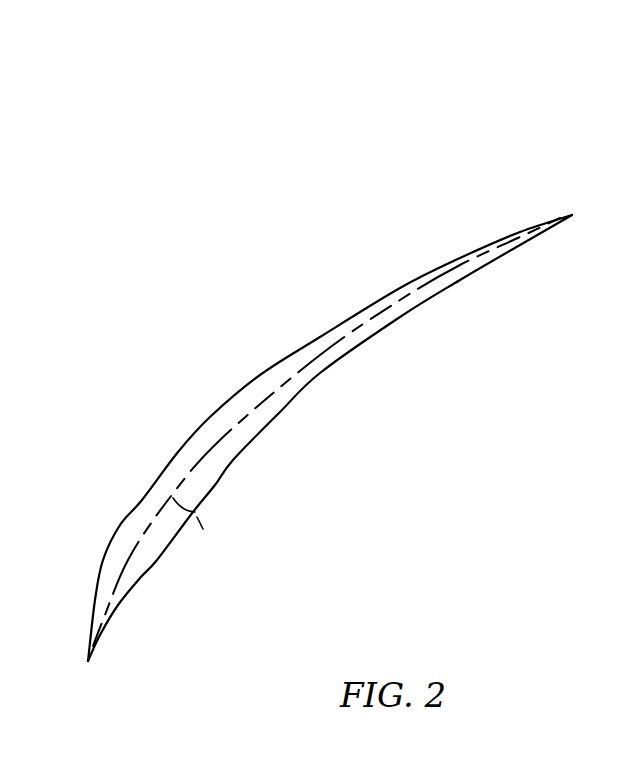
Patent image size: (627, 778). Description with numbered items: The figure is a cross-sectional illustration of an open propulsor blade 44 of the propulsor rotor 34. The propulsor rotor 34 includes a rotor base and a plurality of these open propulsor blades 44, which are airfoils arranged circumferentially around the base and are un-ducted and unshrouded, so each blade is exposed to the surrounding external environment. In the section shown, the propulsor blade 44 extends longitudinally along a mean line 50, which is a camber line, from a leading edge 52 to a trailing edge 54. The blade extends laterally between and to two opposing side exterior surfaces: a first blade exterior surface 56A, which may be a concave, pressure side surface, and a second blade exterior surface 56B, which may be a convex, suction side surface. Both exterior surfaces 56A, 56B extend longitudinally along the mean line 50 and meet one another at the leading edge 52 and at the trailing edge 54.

The propulsor rotor 34 is at (353, 148).
The propulsor blade 44 is at (211, 415).
The mean line 50 is at (204, 534).
The leading edge 52 is at (88, 662).
The trailing edge 54 is at (572, 215).
The first blade exterior surface 56A is at (215, 485).
The second blade exterior surface 56B is at (178, 452).